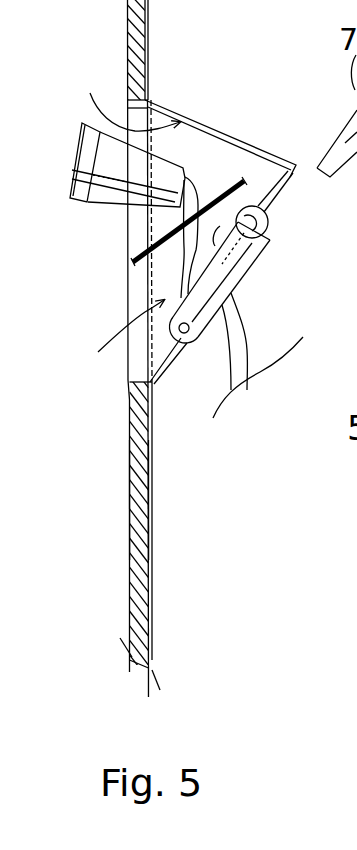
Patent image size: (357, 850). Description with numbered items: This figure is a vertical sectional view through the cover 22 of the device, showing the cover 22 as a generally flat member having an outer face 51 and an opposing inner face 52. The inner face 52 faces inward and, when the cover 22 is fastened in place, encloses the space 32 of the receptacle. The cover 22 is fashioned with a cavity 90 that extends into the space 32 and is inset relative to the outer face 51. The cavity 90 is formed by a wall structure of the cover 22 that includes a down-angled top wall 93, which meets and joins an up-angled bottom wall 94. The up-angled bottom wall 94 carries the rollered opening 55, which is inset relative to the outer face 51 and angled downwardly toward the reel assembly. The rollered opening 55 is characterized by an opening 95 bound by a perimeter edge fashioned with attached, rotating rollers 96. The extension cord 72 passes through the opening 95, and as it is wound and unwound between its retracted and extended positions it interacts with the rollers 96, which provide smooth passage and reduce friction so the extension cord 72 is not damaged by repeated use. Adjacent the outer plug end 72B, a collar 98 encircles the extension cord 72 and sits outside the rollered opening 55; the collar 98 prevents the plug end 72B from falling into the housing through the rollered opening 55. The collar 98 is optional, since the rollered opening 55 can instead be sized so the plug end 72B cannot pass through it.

The cover 22 is at (151, 584).
The outer face 51 is at (128, 500).
The inner face 52 is at (153, 533).
The down-angled top wall 93 is at (198, 124).
The up-angled bottom wall 94 is at (286, 192).
The rollers 96 is at (255, 207).
The collar 98 is at (193, 270).
The outer plug end 72B is at (107, 186).
The opening 95 is at (210, 238).
The extension cord 72 is at (243, 352).
The space 32 is at (258, 462).
The cavity 90 is at (121, 99).
The rollered opening 55 is at (122, 342).